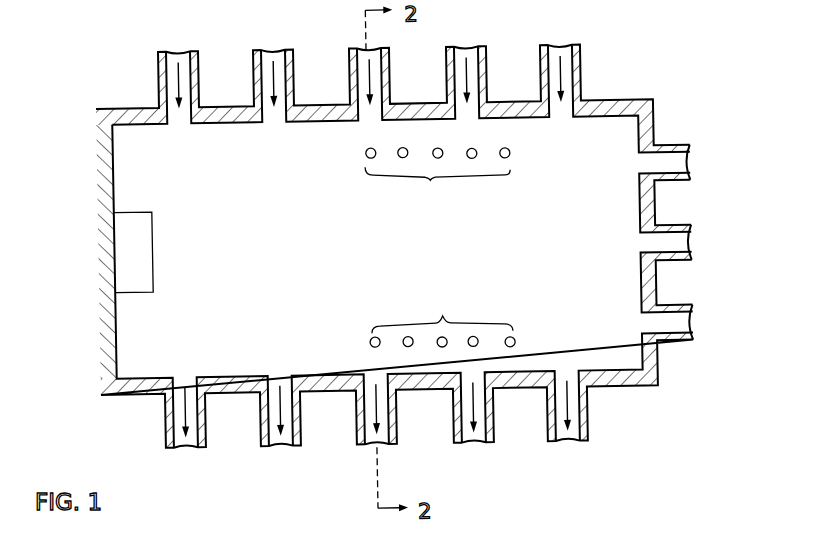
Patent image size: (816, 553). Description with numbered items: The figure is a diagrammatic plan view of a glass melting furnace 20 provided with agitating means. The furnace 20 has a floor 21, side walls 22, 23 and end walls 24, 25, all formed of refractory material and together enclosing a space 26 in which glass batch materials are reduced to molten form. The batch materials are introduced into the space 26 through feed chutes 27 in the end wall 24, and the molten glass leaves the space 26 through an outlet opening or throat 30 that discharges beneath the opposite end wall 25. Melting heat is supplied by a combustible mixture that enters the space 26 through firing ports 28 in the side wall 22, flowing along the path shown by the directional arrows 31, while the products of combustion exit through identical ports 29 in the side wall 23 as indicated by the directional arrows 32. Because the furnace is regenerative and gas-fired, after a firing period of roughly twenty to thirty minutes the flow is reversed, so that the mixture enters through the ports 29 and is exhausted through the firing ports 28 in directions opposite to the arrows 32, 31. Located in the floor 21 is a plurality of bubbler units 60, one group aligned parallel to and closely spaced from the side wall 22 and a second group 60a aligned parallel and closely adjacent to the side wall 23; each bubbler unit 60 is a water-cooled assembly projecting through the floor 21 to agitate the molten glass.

The glass melting furnace 20 is at (644, 106).
The floor 21 is at (164, 364).
The side wall 22 is at (405, 109).
The side wall 23 is at (322, 398).
The end wall 24 is at (648, 370).
The end wall 25 is at (104, 354).
The space 26 is at (308, 260).
The feed chutes 27 is at (676, 230).
The firing ports 28 is at (160, 69).
The ports 29 is at (255, 449).
The outlet opening or throat 30 is at (153, 250).
The directional arrows 31 is at (561, 85).
The directional arrows 32 is at (562, 416).
The bubbler units 60 is at (402, 154).
The nozzle openings row B 60a is at (469, 353).